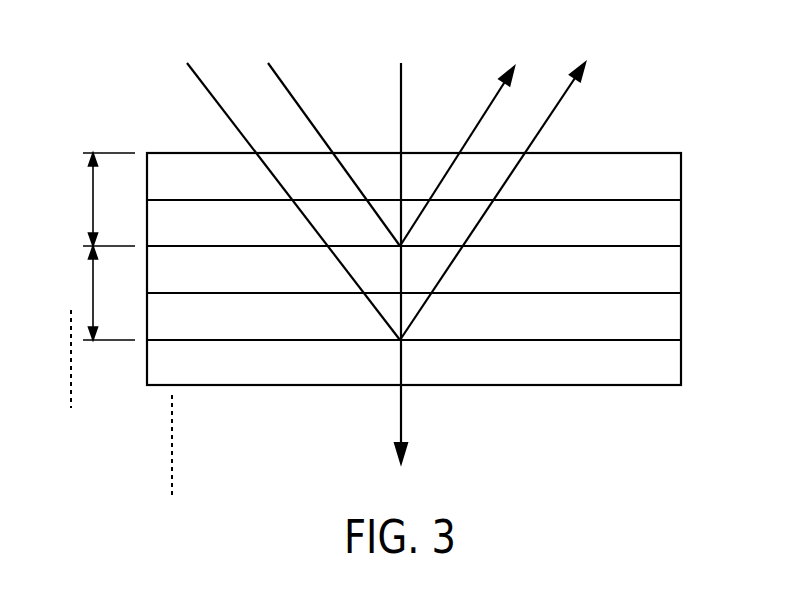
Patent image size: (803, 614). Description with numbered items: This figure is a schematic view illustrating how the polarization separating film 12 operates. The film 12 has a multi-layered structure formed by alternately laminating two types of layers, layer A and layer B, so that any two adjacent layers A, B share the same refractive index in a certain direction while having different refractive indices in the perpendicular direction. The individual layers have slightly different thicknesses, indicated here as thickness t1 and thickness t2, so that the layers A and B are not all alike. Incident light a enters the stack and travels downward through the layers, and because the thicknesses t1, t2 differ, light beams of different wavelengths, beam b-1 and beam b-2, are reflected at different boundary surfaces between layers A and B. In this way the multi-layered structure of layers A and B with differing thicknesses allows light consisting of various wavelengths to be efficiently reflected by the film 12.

The multilayer film stack 12 is at (414, 207).
The layer A is at (171, 271).
The layer B is at (171, 269).
The incident light beam a is at (400, 245).
The light beam b-1 is at (372, 137).
The light beam b-2 is at (364, 184).
The thickness t1 is at (95, 199).
The thickness t2 is at (95, 293).